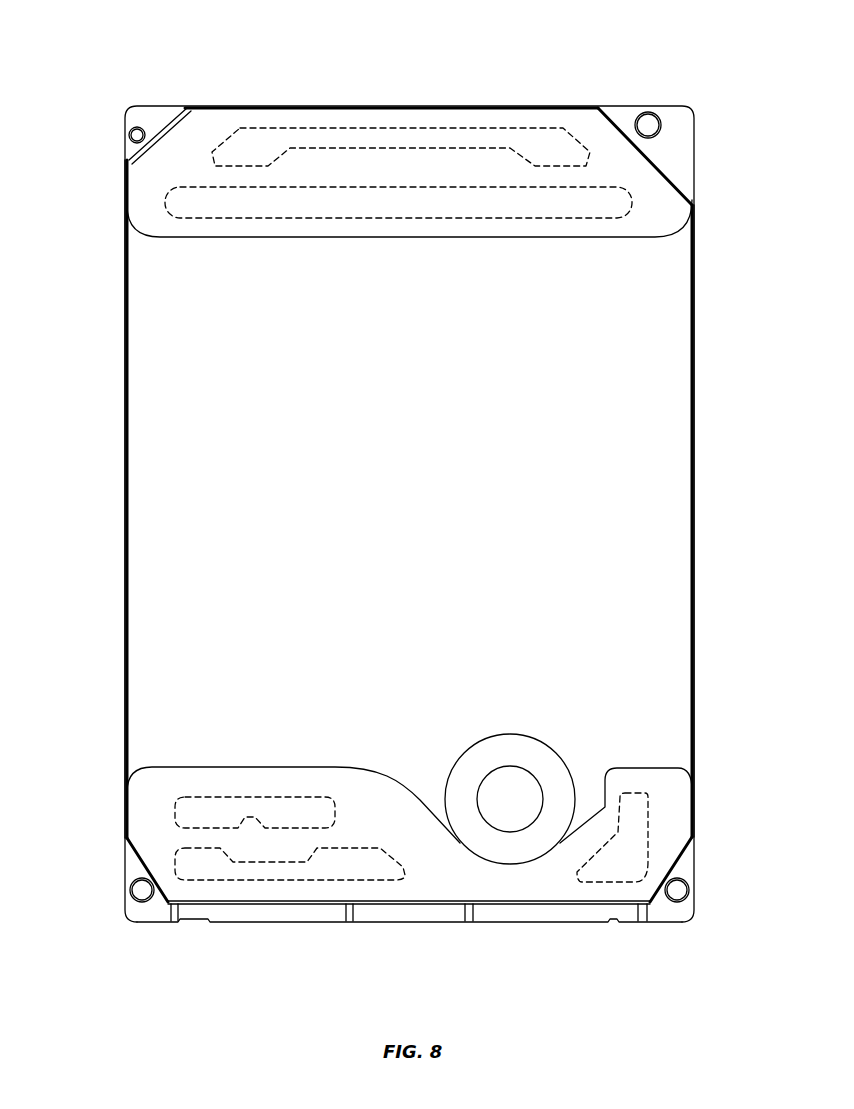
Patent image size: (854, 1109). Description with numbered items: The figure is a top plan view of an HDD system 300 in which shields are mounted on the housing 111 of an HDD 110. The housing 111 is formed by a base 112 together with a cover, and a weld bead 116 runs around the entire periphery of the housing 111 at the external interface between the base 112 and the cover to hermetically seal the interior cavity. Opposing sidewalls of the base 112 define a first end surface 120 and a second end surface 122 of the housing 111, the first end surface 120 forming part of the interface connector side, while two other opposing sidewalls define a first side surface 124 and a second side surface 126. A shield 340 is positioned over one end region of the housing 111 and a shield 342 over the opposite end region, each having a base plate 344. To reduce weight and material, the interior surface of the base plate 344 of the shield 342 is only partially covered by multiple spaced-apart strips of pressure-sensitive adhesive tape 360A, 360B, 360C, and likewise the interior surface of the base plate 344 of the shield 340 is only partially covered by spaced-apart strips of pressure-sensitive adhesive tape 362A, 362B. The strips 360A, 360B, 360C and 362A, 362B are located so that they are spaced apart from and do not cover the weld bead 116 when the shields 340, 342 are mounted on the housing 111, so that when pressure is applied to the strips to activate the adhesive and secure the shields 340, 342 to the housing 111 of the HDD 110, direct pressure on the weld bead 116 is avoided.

The HDD system 300 is at (699, 44).
The HDD 110 is at (696, 180).
The housing 111 is at (126, 535).
The base 112 is at (682, 861).
The weld bead 116 is at (694, 317).
The first end surface 120 is at (313, 920).
The second end surface 122 is at (357, 108).
The first side surface 124 is at (694, 475).
The second side surface 126 is at (125, 724).
The shield 340 is at (519, 107).
The shield 342 is at (242, 902).
The base plate 344 is at (178, 137).
The pressure-sensitive tape strip 360A is at (200, 866).
The pressure-sensitive tape strip 360B is at (190, 812).
The pressure-sensitive tape strip 360C is at (627, 878).
The pressure-sensitive tape strip 362A is at (245, 152).
The pressure-sensitive tape strip 362B is at (195, 204).